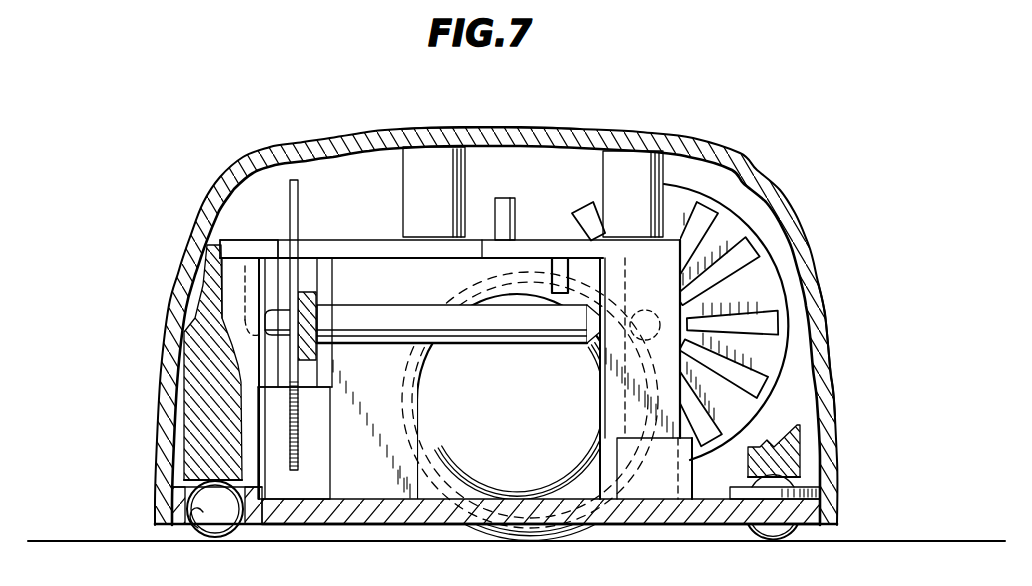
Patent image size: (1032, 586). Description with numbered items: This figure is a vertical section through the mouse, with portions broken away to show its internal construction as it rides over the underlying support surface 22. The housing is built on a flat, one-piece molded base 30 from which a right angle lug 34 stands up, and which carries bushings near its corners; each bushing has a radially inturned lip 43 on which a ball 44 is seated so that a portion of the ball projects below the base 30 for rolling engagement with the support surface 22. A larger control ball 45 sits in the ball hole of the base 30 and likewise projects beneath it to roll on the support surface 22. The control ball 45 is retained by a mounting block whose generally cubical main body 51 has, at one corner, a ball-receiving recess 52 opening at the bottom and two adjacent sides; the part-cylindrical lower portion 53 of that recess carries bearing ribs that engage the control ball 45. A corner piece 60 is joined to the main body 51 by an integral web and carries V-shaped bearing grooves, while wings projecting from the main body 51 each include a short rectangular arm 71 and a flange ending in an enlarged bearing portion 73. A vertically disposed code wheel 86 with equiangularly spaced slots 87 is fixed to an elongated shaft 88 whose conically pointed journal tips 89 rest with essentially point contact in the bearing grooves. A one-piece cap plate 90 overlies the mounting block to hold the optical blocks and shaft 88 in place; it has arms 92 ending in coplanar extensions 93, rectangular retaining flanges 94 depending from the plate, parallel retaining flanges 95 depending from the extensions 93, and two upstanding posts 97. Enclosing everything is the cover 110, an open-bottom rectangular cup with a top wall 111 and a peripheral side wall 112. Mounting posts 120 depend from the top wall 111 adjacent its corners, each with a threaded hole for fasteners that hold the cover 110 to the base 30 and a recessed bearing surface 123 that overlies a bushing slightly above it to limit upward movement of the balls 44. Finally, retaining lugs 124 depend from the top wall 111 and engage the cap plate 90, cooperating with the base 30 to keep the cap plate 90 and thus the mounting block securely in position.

The support surface 22 is at (88, 541).
The base 30 is at (302, 518).
The right angle lug 34 is at (662, 484).
The inturned lip 43 is at (199, 522).
The ball 44 is at (221, 530).
The control ball 45 is at (477, 474).
The main body 51 is at (378, 268).
The ball-receiving recess 52 is at (452, 297).
The part-cylindrical lower portion 53 is at (418, 507).
The corner piece 60 is at (615, 408).
The arm 71 is at (313, 488).
The bearing portion 73 is at (230, 278).
The code wheel 86 is at (745, 233).
The slots 87 is at (760, 263).
The shaft 88 is at (521, 340).
The journal tips 89 is at (606, 318).
The cap plate 90 is at (347, 245).
The arms 92 is at (284, 246).
The extension 93 is at (233, 248).
The retaining flanges 94 is at (556, 272).
The retaining flanges 95 is at (267, 286).
The posts 97 is at (497, 208).
The cover 110 is at (694, 133).
The top wall 111 is at (550, 131).
The side wall 112 is at (829, 397).
The mounting posts 120 is at (207, 425).
The recessed bearing surface 123 is at (193, 483).
The retaining lugs 124 is at (618, 156).